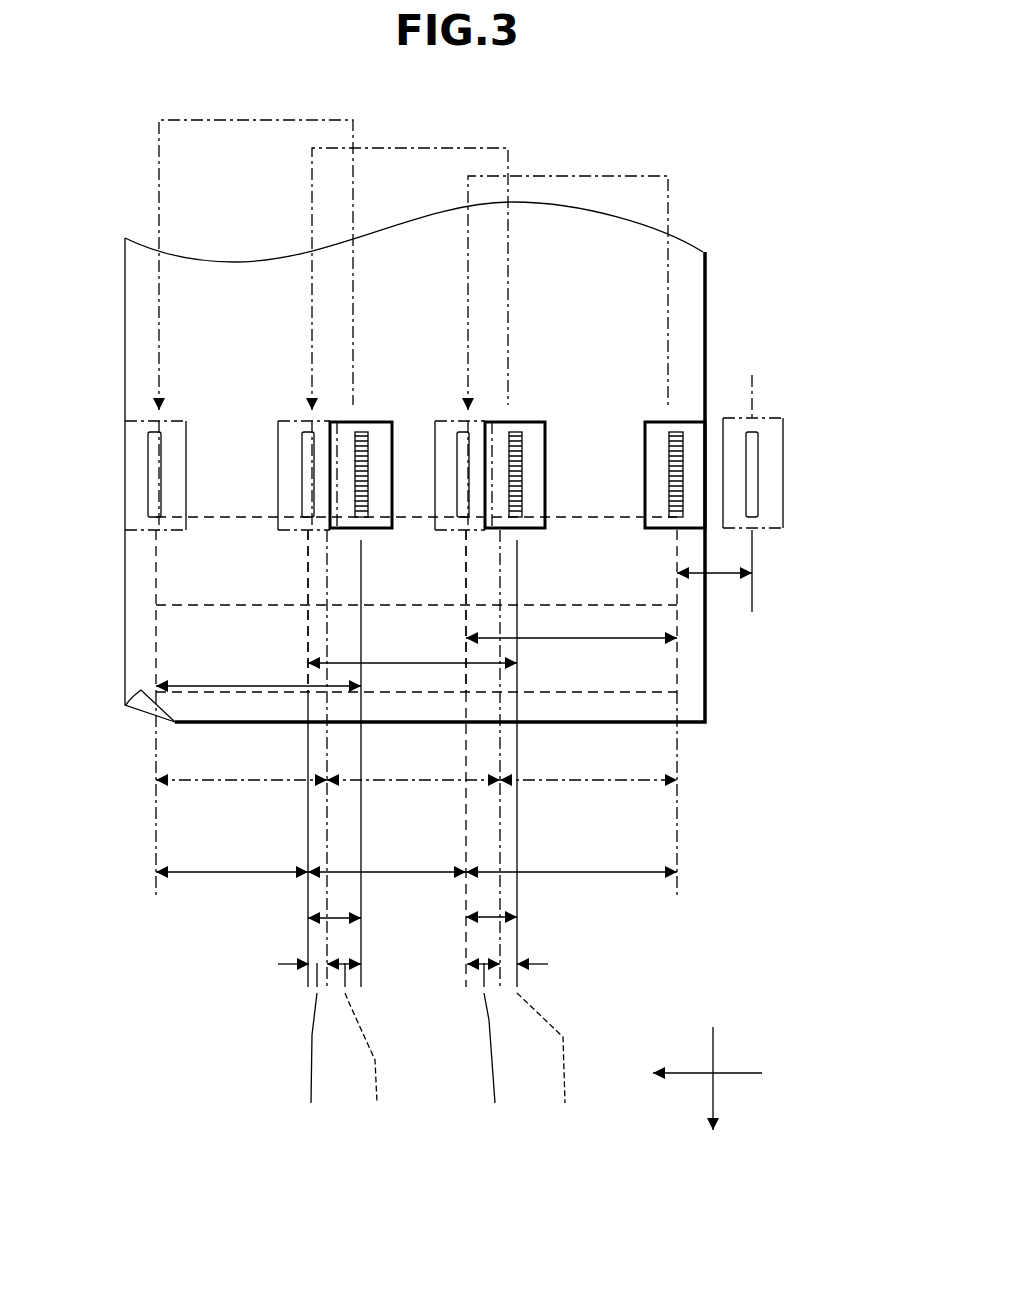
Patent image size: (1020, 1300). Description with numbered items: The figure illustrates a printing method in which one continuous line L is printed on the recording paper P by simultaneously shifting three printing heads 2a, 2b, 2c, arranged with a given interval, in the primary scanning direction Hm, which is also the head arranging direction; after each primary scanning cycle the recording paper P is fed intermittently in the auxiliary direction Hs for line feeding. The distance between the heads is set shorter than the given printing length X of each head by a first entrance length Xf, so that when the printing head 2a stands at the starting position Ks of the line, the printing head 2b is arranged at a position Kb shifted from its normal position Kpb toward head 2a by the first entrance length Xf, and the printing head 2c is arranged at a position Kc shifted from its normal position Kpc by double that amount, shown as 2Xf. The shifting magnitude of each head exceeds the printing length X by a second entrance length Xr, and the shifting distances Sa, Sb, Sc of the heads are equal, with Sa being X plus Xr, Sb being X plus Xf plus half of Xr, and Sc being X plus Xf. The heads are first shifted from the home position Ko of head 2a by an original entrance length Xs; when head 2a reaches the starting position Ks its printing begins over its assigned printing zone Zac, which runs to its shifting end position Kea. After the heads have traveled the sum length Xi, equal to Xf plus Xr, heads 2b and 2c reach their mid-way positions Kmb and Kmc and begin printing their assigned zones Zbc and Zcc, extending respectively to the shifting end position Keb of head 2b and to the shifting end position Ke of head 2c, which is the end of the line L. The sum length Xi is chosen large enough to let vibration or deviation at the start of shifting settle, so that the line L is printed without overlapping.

The recording paper P is at (125, 345).
The printing head 2a is at (436, 420).
The printing head 2b is at (278, 420).
The printing head 2c is at (184, 420).
The home position Ko is at (753, 515).
The line L is at (154, 570).
The shifting end position Ke is at (161, 817).
The starting position Ks is at (685, 817).
The shifting distance Sc is at (258, 672).
The shifting distance Sb is at (412, 649).
The shifting distance Sa is at (571, 626).
The original entrance length Xs is at (714, 592).
The printing length X is at (416, 766).
The assigned printing zone Zcc is at (232, 856).
The assigned printing zone Zbc is at (387, 856).
The assigned printing zone Zac is at (571, 856).
The sum length Xi is at (484, 925).
The shifting end position Keb is at (305, 993).
The mid-way position Kmc is at (265, 816).
The normal position Kpc is at (327, 993).
The shifted position Kc is at (362, 993).
The shifting end position Kea is at (466, 993).
The mid-way position Kmb is at (452, 816).
The normal position Kpb is at (500, 993).
The shifted position Kb is at (522, 993).
The second entrance length Xr is at (330, 1150).
The double first entrance length 2Xf is at (368, 1057).
The first entrance length Xf is at (551, 1056).
The auxiliary direction Hs is at (719, 1061).
The primary scanning direction Hm is at (736, 1074).